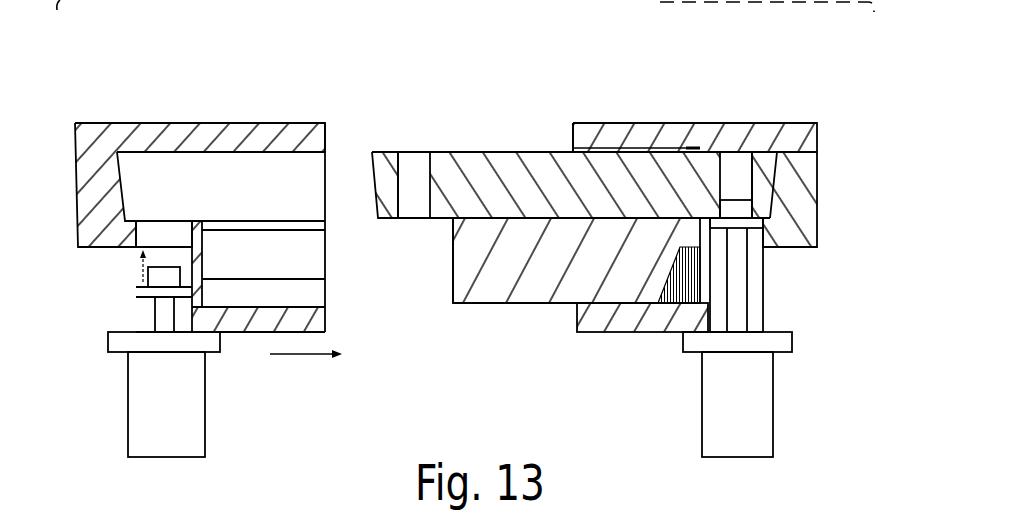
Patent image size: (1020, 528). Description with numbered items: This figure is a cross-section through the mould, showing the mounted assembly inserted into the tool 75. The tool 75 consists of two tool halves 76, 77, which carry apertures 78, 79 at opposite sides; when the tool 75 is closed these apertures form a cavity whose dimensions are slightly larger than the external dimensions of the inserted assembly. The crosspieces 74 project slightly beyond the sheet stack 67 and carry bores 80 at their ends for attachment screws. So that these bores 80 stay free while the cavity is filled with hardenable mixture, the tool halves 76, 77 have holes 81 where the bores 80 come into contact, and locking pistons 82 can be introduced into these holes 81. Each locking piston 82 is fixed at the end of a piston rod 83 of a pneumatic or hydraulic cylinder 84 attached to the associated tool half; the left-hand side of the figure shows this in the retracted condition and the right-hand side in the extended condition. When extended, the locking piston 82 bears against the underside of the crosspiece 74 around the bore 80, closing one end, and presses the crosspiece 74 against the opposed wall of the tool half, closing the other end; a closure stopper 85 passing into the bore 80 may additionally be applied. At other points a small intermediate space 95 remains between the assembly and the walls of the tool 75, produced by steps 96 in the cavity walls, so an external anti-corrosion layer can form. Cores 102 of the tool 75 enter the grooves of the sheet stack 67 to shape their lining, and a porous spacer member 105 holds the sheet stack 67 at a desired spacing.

The sheet stack 67 is at (533, 272).
The crosspiece 74 is at (530, 187).
The tool 75 is at (119, 114).
The tool half 76 is at (663, 132).
The tool half 77 is at (192, 135).
The aperture 78 is at (285, 192).
The aperture 79 is at (572, 146).
The bore 80 is at (415, 177).
The hole 81 is at (157, 235).
The locking piston 82 is at (152, 291).
The piston rod 83 is at (163, 318).
The pneumatic or hydraulic cylinder 84 is at (162, 423).
The closure stopper 85 is at (163, 276).
The intermediate space 95 is at (611, 146).
The step 96 is at (245, 170).
The core 102 is at (314, 273).
The spacer member 105 is at (453, 275).